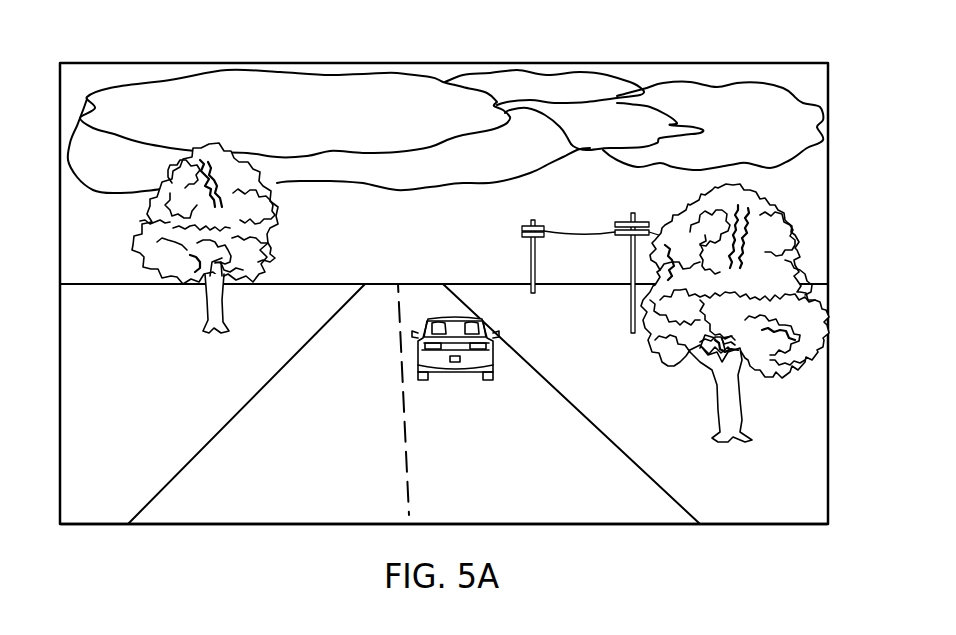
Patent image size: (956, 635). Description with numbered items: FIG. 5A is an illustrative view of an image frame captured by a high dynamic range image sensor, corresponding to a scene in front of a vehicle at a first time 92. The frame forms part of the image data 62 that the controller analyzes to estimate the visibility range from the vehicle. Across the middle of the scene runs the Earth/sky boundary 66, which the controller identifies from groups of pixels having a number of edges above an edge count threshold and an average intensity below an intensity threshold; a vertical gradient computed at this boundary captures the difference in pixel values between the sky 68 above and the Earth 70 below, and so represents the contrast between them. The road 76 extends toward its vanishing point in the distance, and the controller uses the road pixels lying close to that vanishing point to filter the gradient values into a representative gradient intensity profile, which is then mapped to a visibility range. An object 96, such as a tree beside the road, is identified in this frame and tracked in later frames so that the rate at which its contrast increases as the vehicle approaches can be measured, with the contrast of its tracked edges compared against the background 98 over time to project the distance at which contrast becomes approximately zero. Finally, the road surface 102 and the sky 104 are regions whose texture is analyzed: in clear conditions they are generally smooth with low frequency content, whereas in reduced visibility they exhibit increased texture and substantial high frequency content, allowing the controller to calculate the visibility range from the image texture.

The first time 92 is at (440, 42).
The image data 62 is at (738, 83).
The Earth/sky boundary 66 is at (337, 280).
The sky 104 is at (484, 246).
The object 96 is at (140, 247).
The sky 68 is at (757, 294).
The background 98 is at (806, 221).
The road surface 102 is at (322, 455).
The road 76 is at (553, 407).
The Earth 70 is at (792, 431).